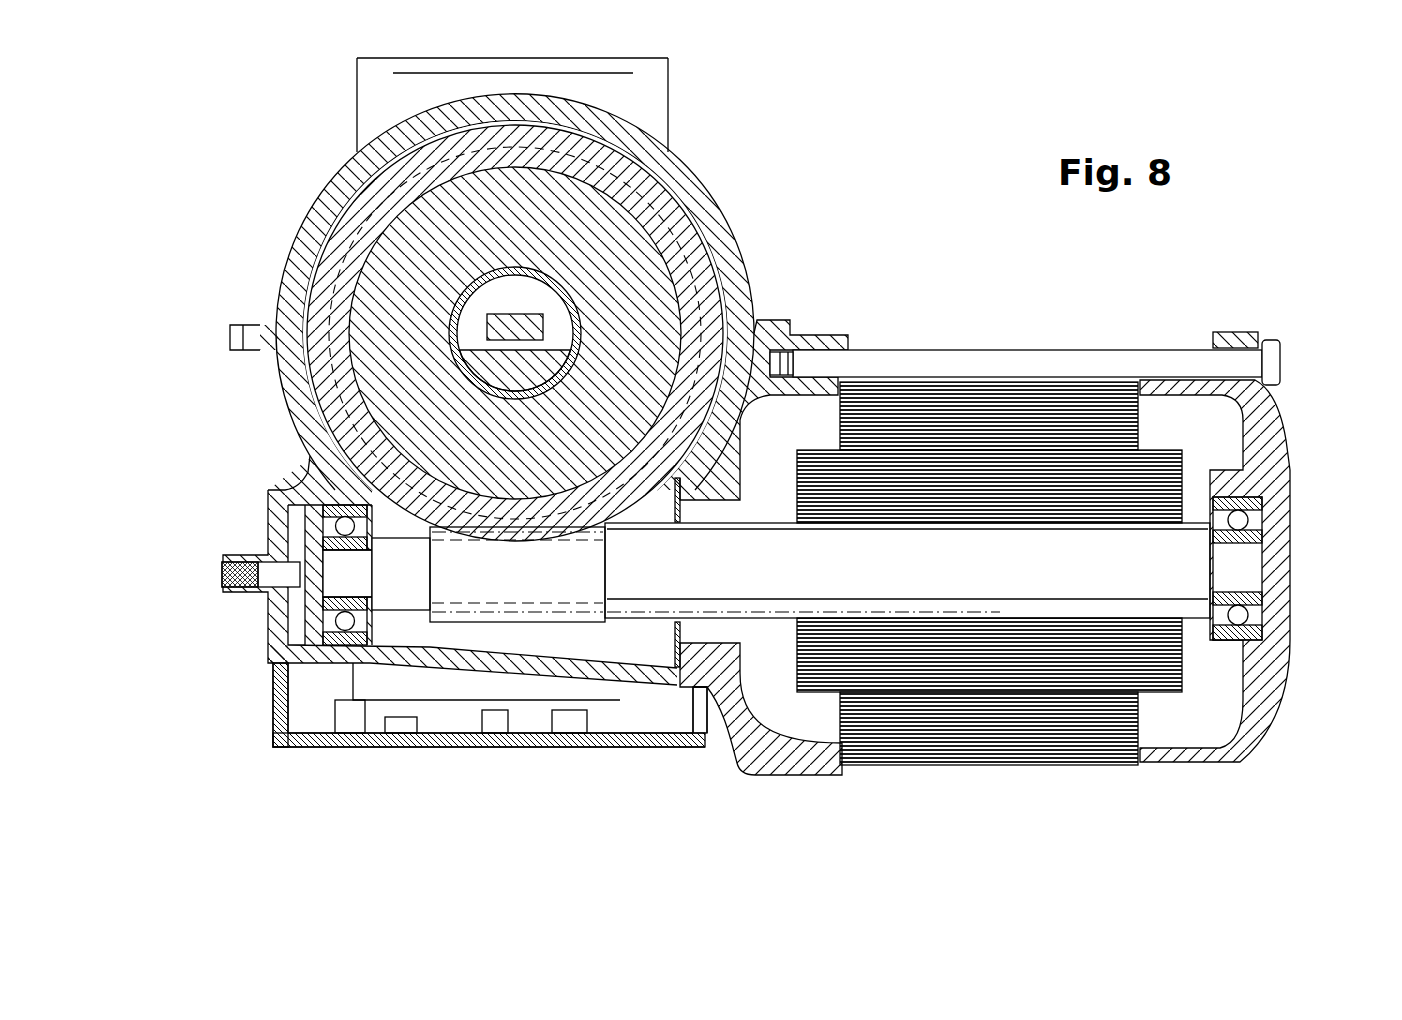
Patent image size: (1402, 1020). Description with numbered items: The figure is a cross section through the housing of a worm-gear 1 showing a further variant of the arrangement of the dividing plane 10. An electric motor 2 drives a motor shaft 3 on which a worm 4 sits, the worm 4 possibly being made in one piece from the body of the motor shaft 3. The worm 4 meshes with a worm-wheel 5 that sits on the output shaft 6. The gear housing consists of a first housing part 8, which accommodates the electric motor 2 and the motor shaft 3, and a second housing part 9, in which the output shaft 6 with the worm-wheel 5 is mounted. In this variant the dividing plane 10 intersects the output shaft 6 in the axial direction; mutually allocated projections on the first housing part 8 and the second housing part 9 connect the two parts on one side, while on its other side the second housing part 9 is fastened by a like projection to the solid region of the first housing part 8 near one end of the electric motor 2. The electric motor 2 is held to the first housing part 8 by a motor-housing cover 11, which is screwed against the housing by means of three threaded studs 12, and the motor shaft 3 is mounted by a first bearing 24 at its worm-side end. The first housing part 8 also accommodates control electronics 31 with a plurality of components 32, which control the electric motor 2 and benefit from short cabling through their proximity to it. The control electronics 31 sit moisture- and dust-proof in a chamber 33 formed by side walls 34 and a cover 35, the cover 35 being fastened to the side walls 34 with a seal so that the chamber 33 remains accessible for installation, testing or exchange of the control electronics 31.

The worm-gear 1 is at (812, 272).
The electric motor 2 is at (1000, 480).
The motor shaft 3 is at (772, 585).
The worm 4 is at (460, 595).
The worm-wheel 5 is at (680, 250).
The output shaft 6 is at (470, 311).
The first housing part 8 is at (310, 445).
The second housing part 9 is at (688, 180).
The dividing plane 10 is at (230, 338).
The motor-housing cover 11 is at (1290, 472).
The threaded studs 12 is at (1165, 352).
The first bearing 24 is at (1262, 637).
The control electronics 31 is at (335, 718).
The components 32 is at (580, 722).
The chamber 33 is at (305, 685).
The side walls 34 is at (275, 713).
The cover 35 is at (378, 742).